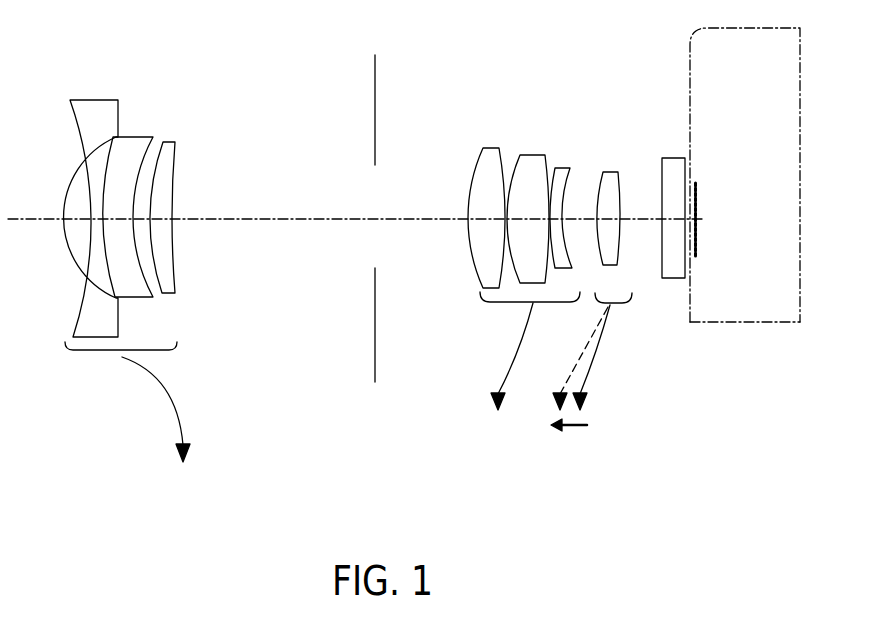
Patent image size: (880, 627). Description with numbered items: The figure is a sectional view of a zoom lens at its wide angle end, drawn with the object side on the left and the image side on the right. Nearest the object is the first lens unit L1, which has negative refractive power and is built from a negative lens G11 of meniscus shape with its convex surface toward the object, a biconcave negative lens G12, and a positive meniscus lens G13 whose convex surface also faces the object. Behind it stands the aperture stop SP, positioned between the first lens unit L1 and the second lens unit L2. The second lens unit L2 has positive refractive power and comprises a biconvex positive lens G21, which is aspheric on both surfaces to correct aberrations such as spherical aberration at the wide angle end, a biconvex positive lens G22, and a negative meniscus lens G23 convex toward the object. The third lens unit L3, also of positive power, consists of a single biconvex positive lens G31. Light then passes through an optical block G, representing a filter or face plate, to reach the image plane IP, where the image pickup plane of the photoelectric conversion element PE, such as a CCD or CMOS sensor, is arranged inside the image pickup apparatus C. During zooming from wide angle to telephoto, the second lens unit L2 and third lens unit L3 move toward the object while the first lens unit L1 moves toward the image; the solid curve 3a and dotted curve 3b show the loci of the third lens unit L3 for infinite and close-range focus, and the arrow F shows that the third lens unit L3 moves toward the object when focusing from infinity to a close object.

The first lens unit L1 is at (185, 52).
The negative lens G11 is at (103, 110).
The negative lens G12 is at (133, 147).
The positive lens G13 is at (168, 167).
The aperture stop SP is at (372, 52).
The second lens unit L2 is at (595, 83).
The positive lens G21 is at (495, 145).
The positive lens G22 is at (530, 163).
The negative lens G23 is at (570, 165).
The third lens unit L3 is at (673, 82).
The positive lens G31 is at (615, 170).
The optical block G is at (687, 153).
The image plane IP is at (697, 180).
The image pickup apparatus C is at (768, 327).
The image pickup element PE is at (703, 323).
The curve (solid line) 3a is at (598, 357).
The curve (dotted line) 3b is at (574, 358).
The arrow F is at (569, 441).